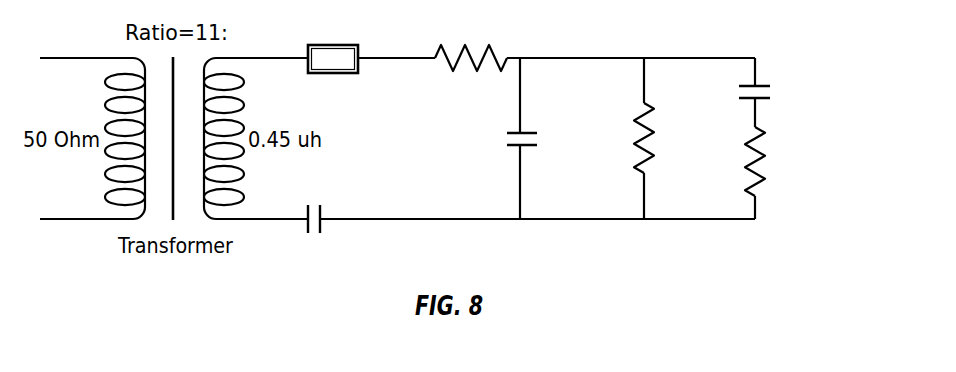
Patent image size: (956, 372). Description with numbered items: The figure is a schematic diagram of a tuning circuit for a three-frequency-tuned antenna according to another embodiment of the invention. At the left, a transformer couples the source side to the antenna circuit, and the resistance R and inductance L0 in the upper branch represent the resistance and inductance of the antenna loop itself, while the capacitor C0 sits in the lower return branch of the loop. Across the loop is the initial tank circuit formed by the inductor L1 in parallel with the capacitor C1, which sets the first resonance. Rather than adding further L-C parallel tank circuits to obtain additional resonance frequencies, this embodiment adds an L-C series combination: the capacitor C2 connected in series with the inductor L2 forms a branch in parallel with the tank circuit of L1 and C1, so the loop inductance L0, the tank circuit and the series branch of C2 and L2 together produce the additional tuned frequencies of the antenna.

The resistance of the antenna loop R is at (340, 43).
The inductance of the antenna loop L0 is at (478, 42).
The capacitor C0 is at (341, 238).
The tank circuit capacitor C1 is at (442, 138).
The tank circuit inductor L1 is at (590, 138).
The series combination capacitor C2 is at (756, 69).
The series combination inductor L2 is at (812, 173).